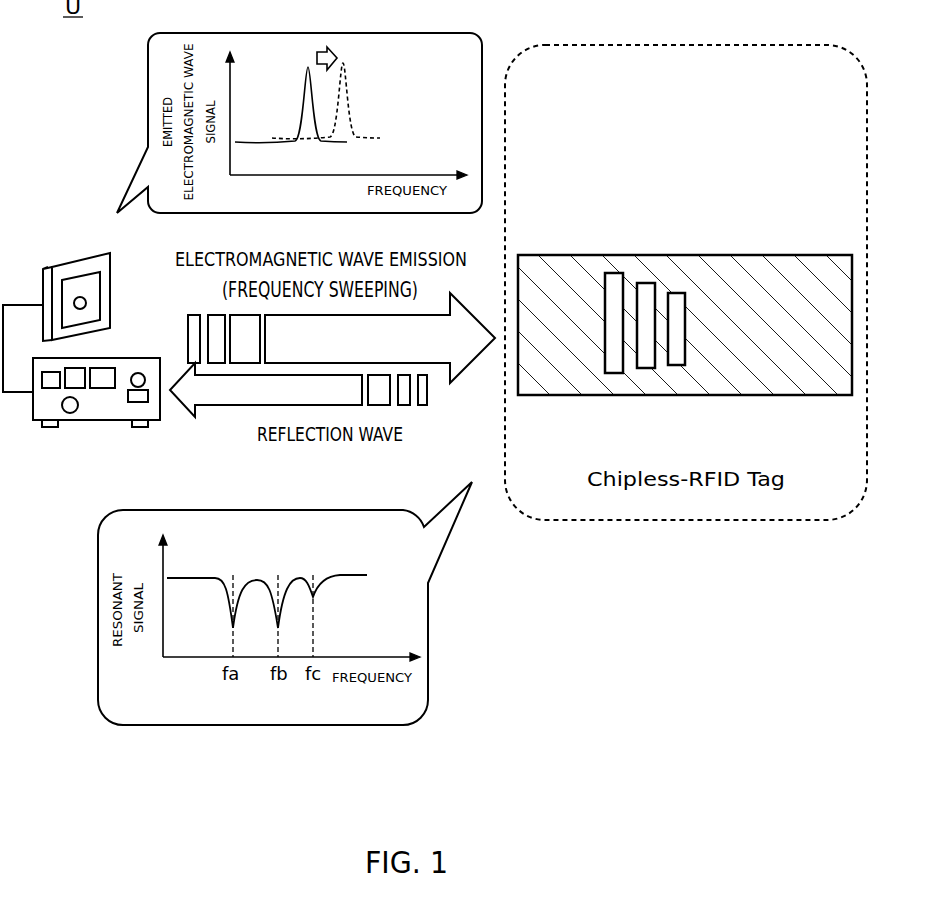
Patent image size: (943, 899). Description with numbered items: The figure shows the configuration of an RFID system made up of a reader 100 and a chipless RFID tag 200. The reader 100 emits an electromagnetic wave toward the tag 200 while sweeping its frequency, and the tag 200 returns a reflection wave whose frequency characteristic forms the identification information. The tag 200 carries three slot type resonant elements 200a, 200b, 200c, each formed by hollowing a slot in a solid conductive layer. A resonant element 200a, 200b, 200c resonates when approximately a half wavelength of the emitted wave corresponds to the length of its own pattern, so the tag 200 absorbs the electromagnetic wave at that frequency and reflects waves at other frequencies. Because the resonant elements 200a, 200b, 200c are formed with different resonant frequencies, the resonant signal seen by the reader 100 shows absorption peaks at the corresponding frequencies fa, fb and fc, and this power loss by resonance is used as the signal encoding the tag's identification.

The reader 100 is at (74, 246).
The chipless RFID tag 200 is at (754, 214).
The slot type resonant element 200a is at (610, 277).
The slot type resonant element 200b is at (647, 282).
The slot type resonant element 200c is at (695, 277).